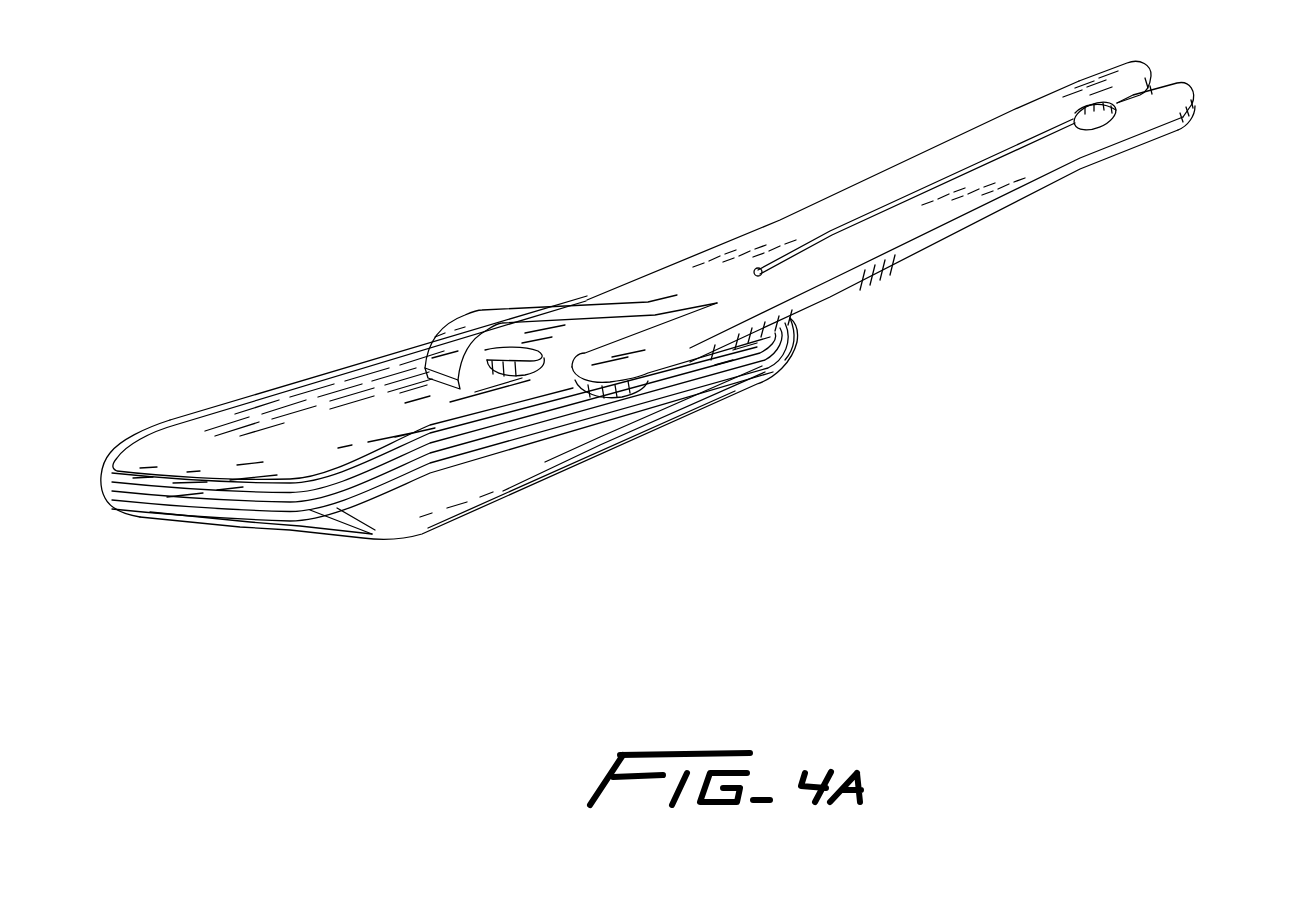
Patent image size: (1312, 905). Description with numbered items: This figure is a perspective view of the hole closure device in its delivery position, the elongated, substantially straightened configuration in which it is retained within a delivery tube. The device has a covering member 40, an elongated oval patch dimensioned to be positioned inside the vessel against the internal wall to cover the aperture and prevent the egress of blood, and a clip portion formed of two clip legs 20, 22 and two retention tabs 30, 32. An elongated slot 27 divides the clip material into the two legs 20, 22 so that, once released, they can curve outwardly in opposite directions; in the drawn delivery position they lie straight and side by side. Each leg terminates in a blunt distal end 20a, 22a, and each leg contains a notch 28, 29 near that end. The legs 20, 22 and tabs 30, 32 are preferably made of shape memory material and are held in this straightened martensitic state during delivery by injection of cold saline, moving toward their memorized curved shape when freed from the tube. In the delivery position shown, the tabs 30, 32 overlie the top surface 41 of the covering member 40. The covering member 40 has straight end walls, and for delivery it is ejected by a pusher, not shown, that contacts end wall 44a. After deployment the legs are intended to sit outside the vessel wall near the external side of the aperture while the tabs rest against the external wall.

The clip leg 20 is at (913, 215).
The blunt distal end 20a is at (1183, 88).
The clip leg 22 is at (870, 195).
The blunt distal end 22a is at (1133, 63).
The elongated slot 27 is at (990, 155).
The notch 28 is at (1105, 128).
The notch 29 is at (1077, 82).
The retention tab 30 is at (627, 290).
The retention tab 32 is at (650, 347).
The covering member 40 is at (328, 382).
The top surface 41 is at (322, 448).
The end wall 44a is at (790, 317).